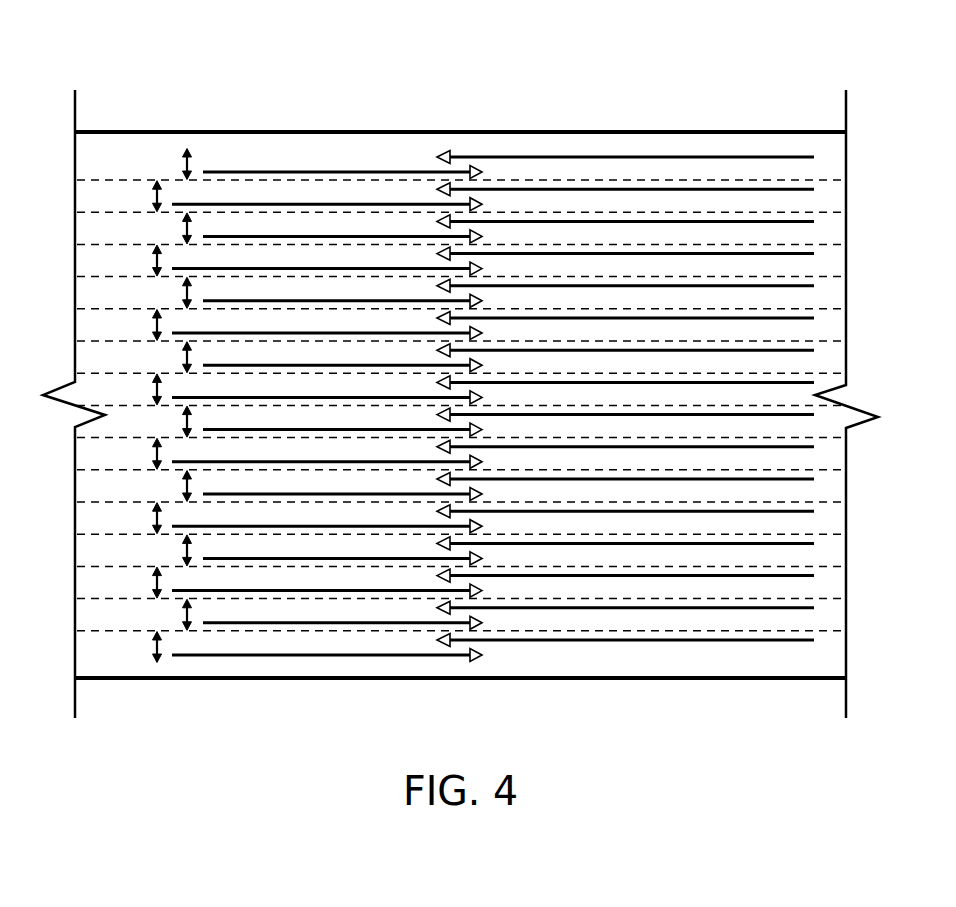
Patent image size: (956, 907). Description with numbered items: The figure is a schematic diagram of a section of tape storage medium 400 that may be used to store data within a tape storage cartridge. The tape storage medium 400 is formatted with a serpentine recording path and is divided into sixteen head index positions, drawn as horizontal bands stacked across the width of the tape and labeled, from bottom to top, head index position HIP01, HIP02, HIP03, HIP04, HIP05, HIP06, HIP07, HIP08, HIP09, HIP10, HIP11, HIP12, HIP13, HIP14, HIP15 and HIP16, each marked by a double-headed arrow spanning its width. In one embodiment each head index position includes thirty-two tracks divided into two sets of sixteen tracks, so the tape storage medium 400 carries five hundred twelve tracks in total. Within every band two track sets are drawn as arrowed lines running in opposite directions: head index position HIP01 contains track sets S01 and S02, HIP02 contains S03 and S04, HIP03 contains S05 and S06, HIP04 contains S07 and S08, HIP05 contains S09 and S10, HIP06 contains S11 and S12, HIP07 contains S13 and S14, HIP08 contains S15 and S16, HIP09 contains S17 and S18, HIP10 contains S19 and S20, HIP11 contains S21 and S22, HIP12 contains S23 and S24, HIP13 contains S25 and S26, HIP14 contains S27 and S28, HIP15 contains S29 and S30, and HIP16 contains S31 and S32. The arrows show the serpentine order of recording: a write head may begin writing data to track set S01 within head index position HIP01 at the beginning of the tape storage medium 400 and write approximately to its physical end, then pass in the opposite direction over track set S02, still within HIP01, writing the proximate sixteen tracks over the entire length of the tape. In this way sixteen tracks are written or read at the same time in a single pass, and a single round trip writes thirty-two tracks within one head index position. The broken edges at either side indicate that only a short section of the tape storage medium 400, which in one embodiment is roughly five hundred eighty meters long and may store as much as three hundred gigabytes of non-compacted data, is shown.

The tape storage medium 400 is at (232, 75).
The head index position 01 HIP01 is at (123, 647).
The head index position 02 HIP02 is at (153, 614).
The head index position 03 HIP03 is at (123, 582).
The head index position 04 HIP04 is at (153, 550).
The head index position 05 HIP05 is at (123, 518).
The head index position 06 HIP06 is at (153, 486).
The head index position 07 HIP07 is at (123, 453).
The head index position 08 HIP08 is at (153, 421).
The head index position 09 HIP09 is at (123, 389).
The head index position 10 HIP10 is at (153, 357).
The head index position 11 HIP11 is at (123, 325).
The head index position 12 HIP12 is at (153, 292).
The head index position 13 HIP13 is at (123, 260).
The head index position 14 HIP14 is at (153, 228).
The head index position 15 HIP15 is at (123, 196).
The head index position 16 HIP16 is at (153, 164).
The track set S01 is at (349, 655).
The track set S02 is at (605, 643).
The track set S03 is at (364, 623).
The track set S04 is at (605, 611).
The track set S05 is at (349, 591).
The track set S06 is at (605, 579).
The track set S07 is at (364, 558).
The track set S08 is at (605, 546).
The track set S09 is at (349, 526).
The track set S10 is at (605, 514).
The track set S11 is at (364, 494).
The track set S12 is at (605, 482).
The track set S13 is at (349, 462).
The track set S14 is at (605, 450).
The track set S15 is at (364, 430).
The track set S16 is at (605, 418).
The track set S17 is at (349, 397).
The track set S18 is at (605, 385).
The track set S19 is at (364, 365).
The track set S20 is at (605, 353).
The track set S21 is at (349, 333).
The track set S22 is at (605, 321).
The track set S23 is at (364, 301).
The track set S24 is at (605, 289).
The track set S25 is at (349, 269).
The track set S26 is at (605, 257).
The track set S27 is at (364, 236).
The track set S28 is at (605, 224).
The track set S29 is at (349, 204).
The track set S30 is at (605, 192).
The track set S31 is at (364, 172).
The track set S32 is at (605, 160).